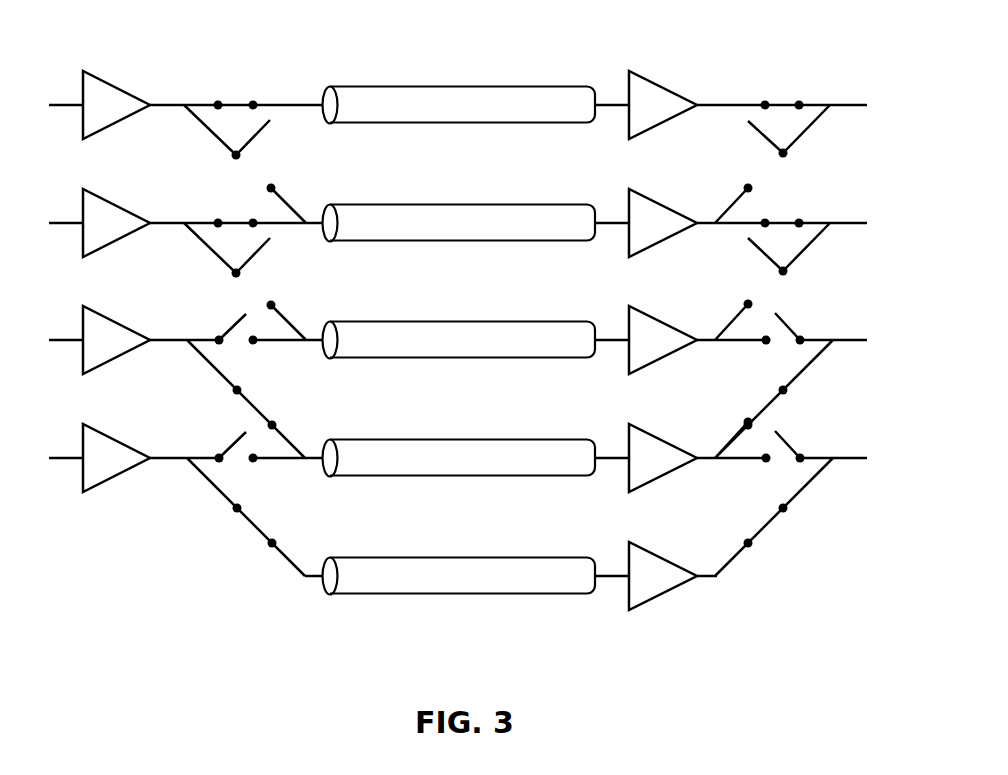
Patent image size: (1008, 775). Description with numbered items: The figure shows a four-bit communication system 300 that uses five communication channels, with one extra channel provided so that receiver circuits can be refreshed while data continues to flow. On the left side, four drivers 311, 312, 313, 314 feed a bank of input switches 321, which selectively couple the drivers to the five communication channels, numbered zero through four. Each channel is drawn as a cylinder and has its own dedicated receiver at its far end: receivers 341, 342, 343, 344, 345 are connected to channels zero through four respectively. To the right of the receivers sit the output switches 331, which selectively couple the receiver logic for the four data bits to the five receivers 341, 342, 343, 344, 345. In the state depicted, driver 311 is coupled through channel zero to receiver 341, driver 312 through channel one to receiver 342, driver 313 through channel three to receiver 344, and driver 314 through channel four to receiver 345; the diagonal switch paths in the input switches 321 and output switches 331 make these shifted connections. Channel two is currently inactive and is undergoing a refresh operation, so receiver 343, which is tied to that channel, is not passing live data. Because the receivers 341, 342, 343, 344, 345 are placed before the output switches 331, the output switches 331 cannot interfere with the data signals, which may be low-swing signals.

The communication system 300 is at (602, 30).
The driver 311 is at (116, 105).
The driver 312 is at (116, 223).
The driver 313 is at (116, 340).
The driver 314 is at (116, 458).
The input switches 321 is at (308, 607).
The output switches 331 is at (715, 606).
The receiver 341 is at (663, 105).
The receiver 342 is at (663, 223).
The receiver 343 is at (663, 340).
The receiver 344 is at (663, 458).
The receiver 345 is at (663, 576).